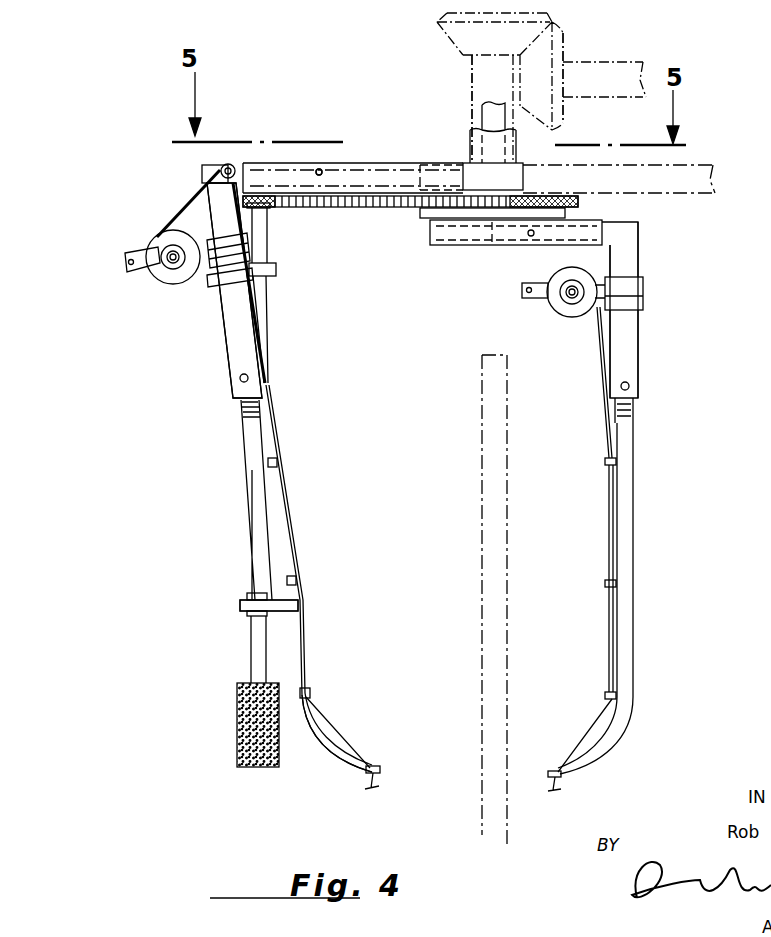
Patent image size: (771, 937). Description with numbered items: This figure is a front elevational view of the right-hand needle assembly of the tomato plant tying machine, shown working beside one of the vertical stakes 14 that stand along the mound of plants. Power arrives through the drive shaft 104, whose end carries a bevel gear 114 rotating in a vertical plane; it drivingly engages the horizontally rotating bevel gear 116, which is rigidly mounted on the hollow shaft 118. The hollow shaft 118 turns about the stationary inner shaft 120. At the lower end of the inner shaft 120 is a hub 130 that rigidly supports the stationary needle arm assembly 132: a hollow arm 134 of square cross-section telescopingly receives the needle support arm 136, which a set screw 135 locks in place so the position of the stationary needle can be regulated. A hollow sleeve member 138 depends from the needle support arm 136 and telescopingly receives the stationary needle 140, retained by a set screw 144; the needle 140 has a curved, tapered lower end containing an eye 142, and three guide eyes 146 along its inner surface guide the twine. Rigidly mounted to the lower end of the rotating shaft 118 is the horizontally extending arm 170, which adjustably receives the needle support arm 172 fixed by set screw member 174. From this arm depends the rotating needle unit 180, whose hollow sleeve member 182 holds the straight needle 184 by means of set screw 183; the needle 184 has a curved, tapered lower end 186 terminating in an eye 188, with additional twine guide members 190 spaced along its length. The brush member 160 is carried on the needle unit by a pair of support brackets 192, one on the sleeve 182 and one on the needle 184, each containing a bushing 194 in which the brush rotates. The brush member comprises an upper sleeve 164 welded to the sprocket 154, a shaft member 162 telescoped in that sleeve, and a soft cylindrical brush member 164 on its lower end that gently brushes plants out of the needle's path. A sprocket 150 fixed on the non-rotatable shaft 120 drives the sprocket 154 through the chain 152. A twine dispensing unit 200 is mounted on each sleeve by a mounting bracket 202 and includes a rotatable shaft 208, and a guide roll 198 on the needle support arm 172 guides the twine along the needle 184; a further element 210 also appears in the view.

The vertical stakes 14 is at (482, 455).
The drive shaft 104 is at (628, 75).
The bevel gear 114 is at (538, 60).
The bevel gear 116 is at (450, 36).
The hollow shaft 118 is at (488, 70).
The inner shaft 120 is at (470, 150).
The hub 130 is at (428, 213).
The stationary needle arm assembly 132 is at (668, 344).
The hollow arm 134 is at (460, 232).
The set screw 135 is at (530, 236).
The needle support arm 136 is at (625, 230).
The hollow sleeve member 138 is at (628, 263).
The stationary needle 140 is at (627, 527).
The eye 142 is at (552, 768).
The set screw 144 is at (635, 383).
The guide eyes 146 is at (606, 582).
The sprocket 150 is at (560, 197).
The chain 152 is at (343, 200).
The sprocket 154 is at (272, 207).
The brush member 160 is at (285, 337).
The shaft member 162 is at (255, 643).
The upper sleeve / cylindrical brush member 164 is at (265, 296).
The horizontally extending arm 170 is at (390, 170).
The needle support arm 172 is at (204, 168).
The set screw member 174 is at (310, 166).
The rotating needle unit 180 is at (212, 384).
The hollow sleeve member 182 is at (230, 335).
The set screw 183 is at (248, 380).
The needle 184 is at (268, 527).
The lower end 186 is at (348, 770).
The eye 188 is at (375, 766).
The twine guide members 190 is at (278, 462).
The support brackets 192 is at (210, 282).
The bushing 194 is at (275, 264).
The guide roll 198 is at (233, 164).
The twine dispensing unit 200 is at (128, 246).
The mounting bracket 202 is at (192, 240).
The shaft 208 is at (645, 280).
The pivot 210 is at (568, 335).